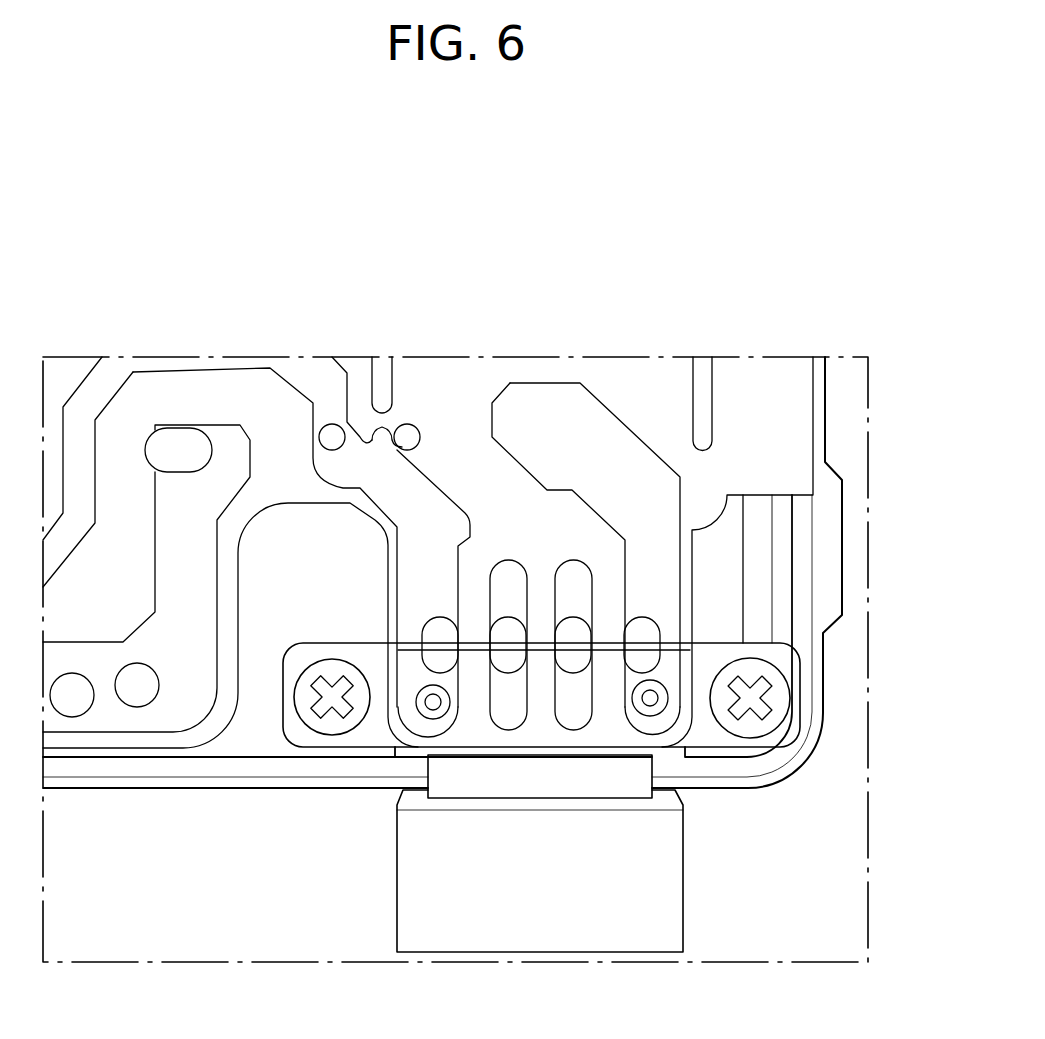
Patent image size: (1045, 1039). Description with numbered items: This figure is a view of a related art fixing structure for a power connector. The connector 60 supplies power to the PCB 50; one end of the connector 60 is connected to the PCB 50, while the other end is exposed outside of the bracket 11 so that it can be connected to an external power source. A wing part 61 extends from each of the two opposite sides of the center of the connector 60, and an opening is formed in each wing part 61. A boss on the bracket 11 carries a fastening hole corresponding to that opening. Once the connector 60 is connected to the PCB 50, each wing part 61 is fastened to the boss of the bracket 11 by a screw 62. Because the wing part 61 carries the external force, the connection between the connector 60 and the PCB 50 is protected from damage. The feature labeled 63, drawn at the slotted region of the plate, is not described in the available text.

The bracket 11 is at (818, 658).
The PCB 50 is at (455, 737).
The connector 60 is at (660, 876).
The wing part 61 is at (783, 733).
The screw 62 is at (780, 700).
The slot hole 63 is at (640, 628).